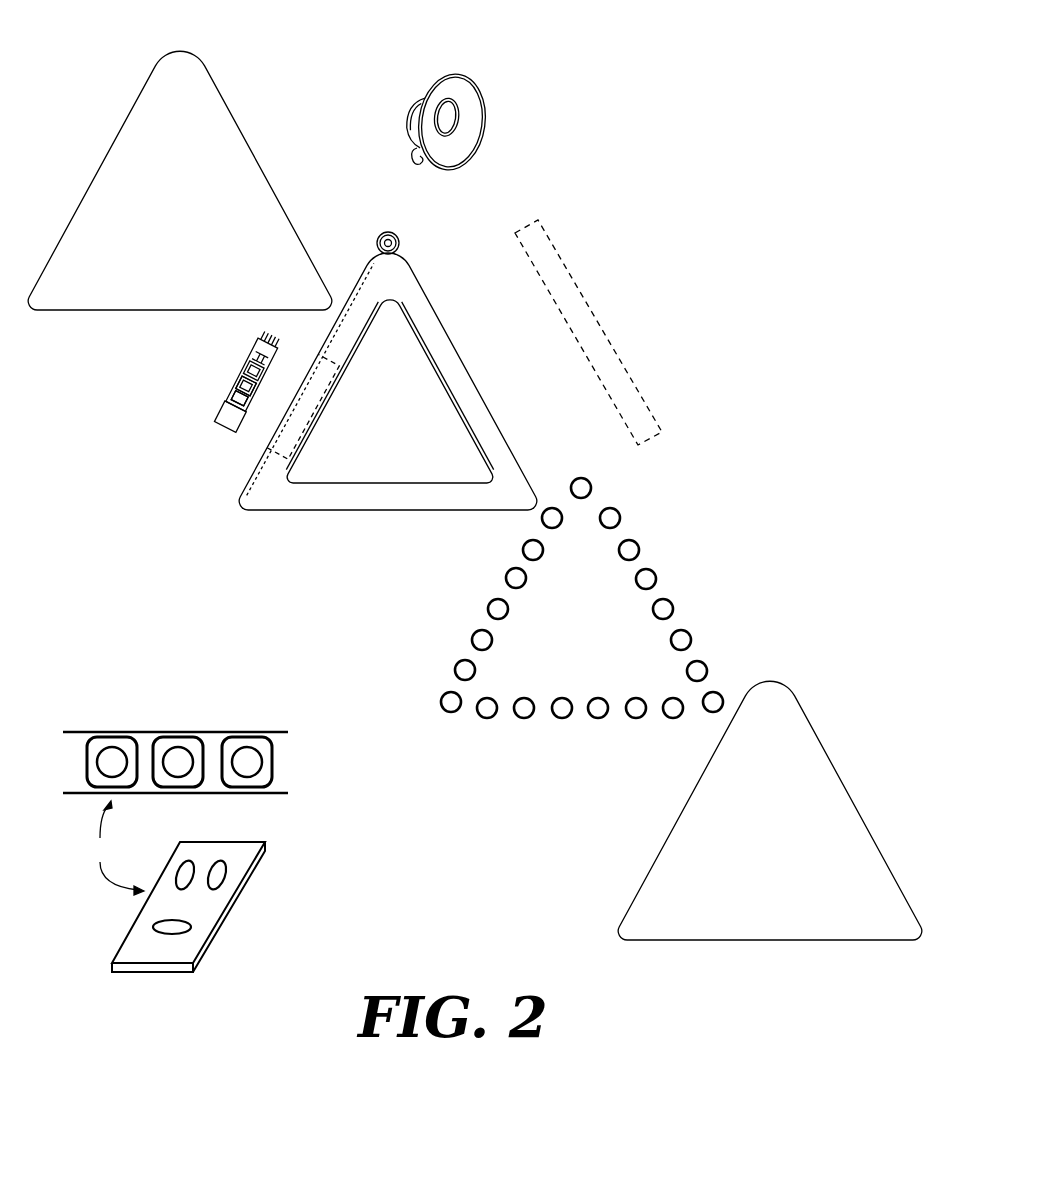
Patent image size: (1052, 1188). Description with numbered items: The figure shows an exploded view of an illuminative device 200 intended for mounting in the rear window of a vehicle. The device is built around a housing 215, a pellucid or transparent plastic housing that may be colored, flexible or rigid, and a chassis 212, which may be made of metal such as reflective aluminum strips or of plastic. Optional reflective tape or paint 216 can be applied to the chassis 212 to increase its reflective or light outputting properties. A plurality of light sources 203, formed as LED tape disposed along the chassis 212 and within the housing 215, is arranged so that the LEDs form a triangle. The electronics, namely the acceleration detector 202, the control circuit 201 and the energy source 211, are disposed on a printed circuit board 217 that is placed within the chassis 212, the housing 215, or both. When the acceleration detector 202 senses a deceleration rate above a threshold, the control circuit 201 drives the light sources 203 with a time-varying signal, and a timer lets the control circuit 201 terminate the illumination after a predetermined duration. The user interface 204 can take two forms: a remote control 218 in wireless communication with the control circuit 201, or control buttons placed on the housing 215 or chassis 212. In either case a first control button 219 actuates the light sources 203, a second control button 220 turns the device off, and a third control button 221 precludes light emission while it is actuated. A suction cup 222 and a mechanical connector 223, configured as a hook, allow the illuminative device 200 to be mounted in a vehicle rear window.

The illuminative device 200 is at (723, 300).
The control circuit 201 is at (244, 370).
The acceleration detector 202 is at (232, 388).
The plurality of light sources 203 is at (674, 608).
The user interface 204 is at (336, 871).
The energy source 211 is at (224, 432).
The chassis 212 is at (350, 512).
The housing 215 is at (254, 153).
The reflective tape or paint 216 is at (585, 304).
The printed circuit board 217 is at (236, 397).
The remote control 218 is at (128, 933).
The first control button 219 is at (112, 745).
The second control button 220 is at (178, 745).
The third control button 221 is at (247, 745).
The suction cup 222 is at (485, 124).
The mechanical connector 223 is at (416, 166).